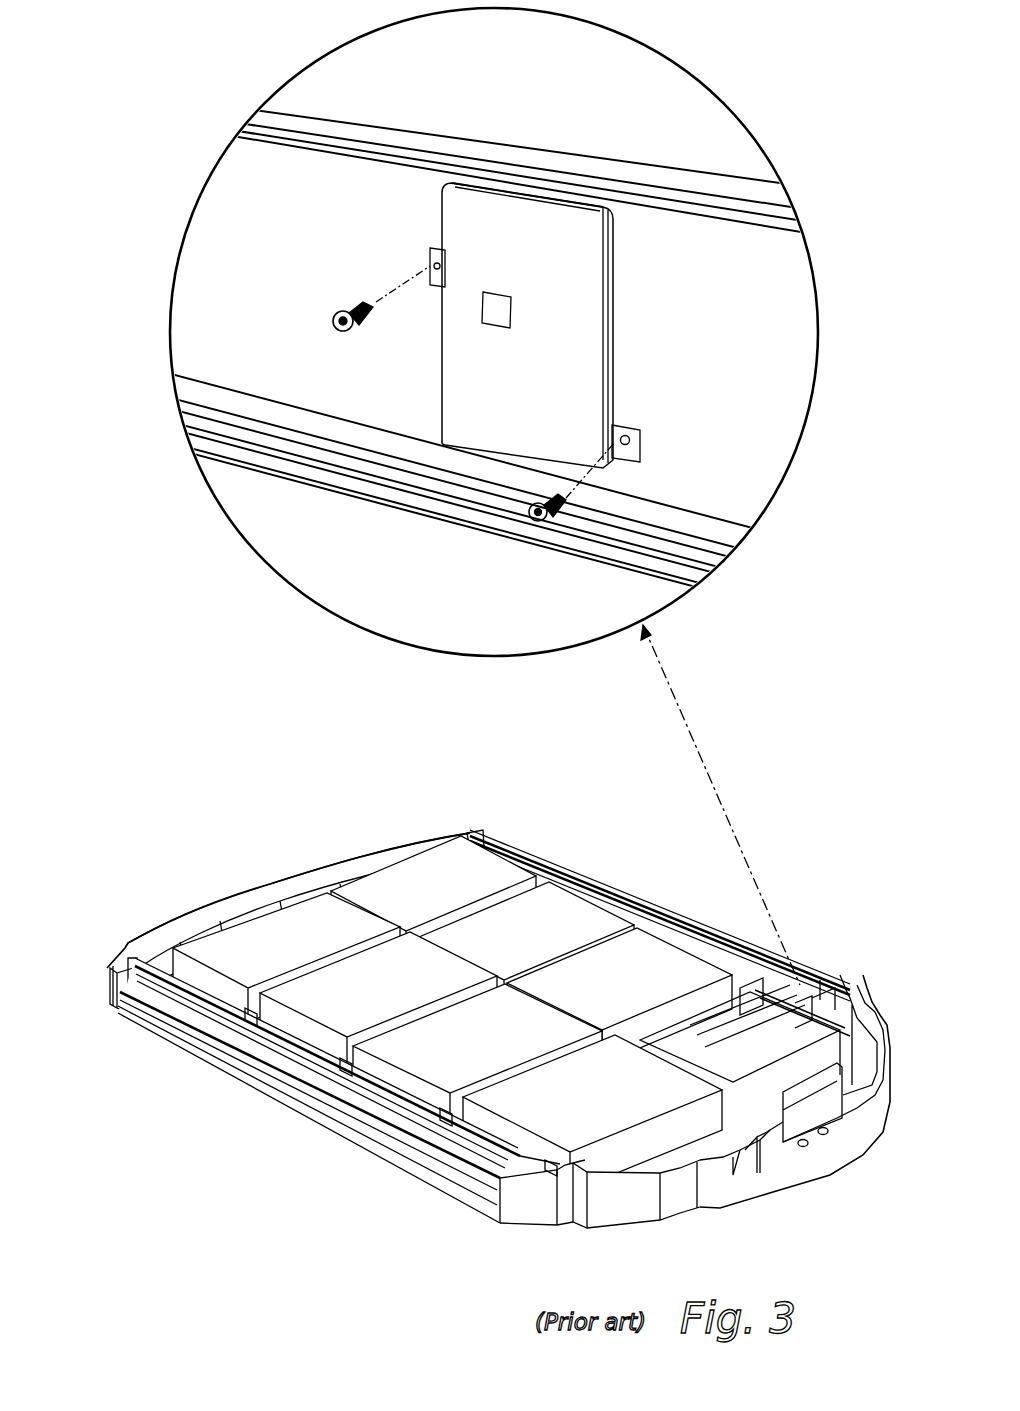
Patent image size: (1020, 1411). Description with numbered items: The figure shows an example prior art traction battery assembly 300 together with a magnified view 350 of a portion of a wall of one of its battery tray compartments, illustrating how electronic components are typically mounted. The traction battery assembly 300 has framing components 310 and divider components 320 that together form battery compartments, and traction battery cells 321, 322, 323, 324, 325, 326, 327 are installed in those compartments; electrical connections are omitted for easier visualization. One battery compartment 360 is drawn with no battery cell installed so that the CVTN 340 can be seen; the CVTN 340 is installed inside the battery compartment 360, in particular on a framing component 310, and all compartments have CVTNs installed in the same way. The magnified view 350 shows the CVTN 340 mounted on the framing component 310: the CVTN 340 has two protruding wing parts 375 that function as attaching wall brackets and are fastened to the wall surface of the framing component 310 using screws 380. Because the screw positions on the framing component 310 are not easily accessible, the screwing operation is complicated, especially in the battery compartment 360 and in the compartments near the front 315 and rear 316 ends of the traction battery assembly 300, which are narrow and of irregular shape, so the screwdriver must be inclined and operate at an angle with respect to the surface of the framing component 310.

The traction battery assembly 300 is at (892, 856).
The framing component 310 is at (222, 262).
The front end 315 is at (757, 1150).
The rear end 316 is at (240, 905).
The divider component 320 is at (250, 1022).
The traction battery cell 321 is at (312, 957).
The traction battery cell 322 is at (460, 898).
The traction battery cell 323 is at (400, 998).
The traction battery cell 324 is at (554, 933).
The traction battery cell 325 is at (502, 1043).
The traction battery cell 326 is at (660, 973).
The traction battery cell 327 is at (617, 1095).
The CVTN 340 is at (815, 988).
The magnified view 350 is at (718, 92).
The battery compartment 360 is at (880, 990).
The protruding wing part 375 is at (430, 262).
The screw 380 is at (350, 332).